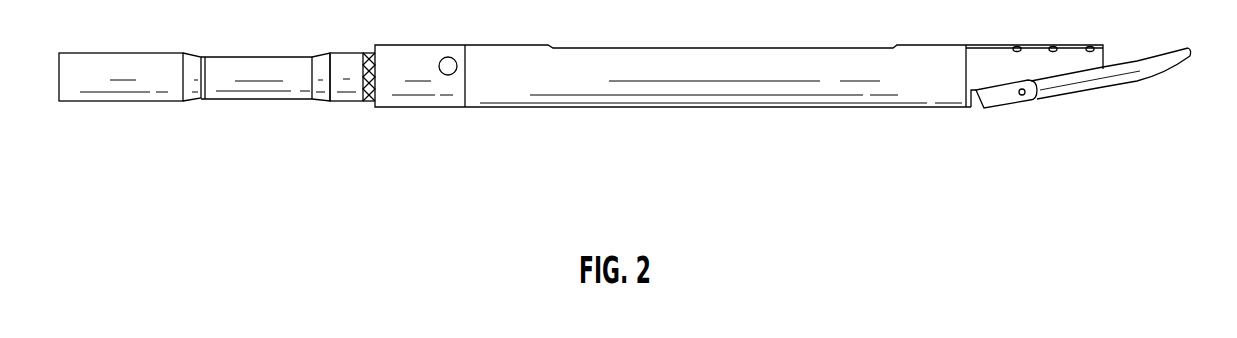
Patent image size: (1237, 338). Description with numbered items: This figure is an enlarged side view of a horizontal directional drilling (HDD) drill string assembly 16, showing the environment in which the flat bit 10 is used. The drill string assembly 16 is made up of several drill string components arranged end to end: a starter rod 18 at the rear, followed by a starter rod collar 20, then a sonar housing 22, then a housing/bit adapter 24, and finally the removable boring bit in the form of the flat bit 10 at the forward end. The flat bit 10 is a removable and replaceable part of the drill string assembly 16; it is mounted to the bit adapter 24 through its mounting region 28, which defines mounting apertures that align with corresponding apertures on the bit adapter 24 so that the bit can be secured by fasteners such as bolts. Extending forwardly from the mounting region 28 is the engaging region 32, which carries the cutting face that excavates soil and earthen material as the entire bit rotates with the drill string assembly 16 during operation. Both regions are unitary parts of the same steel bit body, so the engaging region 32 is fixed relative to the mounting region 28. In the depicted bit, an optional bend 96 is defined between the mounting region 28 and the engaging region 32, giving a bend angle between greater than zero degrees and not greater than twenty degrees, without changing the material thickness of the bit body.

The flat bit 10 is at (1142, 96).
The drill string assembly 16 is at (730, 190).
The starter rod 18 is at (233, 79).
The starter rod collar 20 is at (412, 109).
The sonar housing 22 is at (598, 108).
The housing/bit adapter 24 is at (1003, 56).
The mounting region 28 is at (1014, 104).
The engaging region 32 is at (1158, 78).
The bend 96 is at (1108, 91).